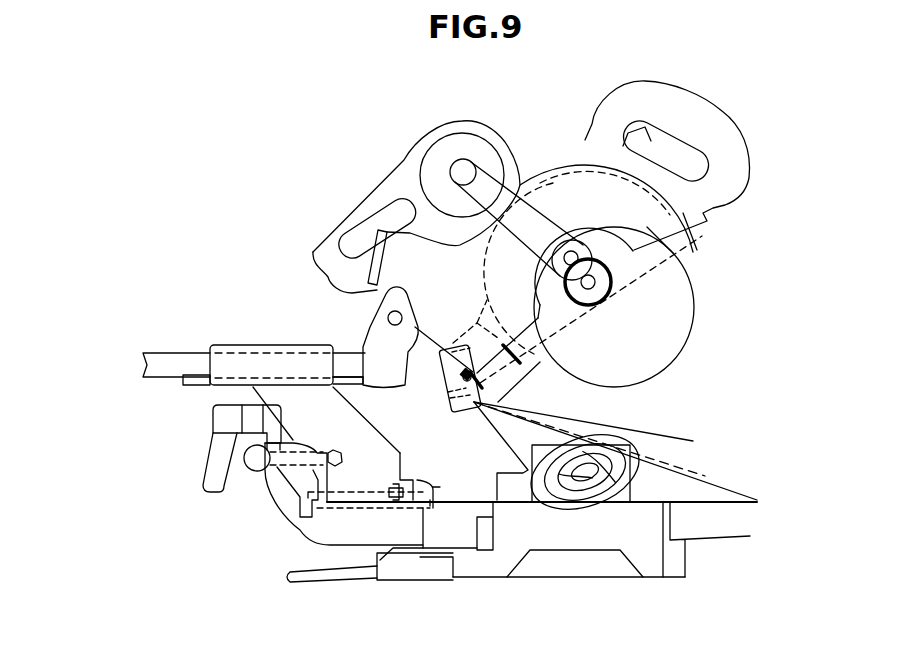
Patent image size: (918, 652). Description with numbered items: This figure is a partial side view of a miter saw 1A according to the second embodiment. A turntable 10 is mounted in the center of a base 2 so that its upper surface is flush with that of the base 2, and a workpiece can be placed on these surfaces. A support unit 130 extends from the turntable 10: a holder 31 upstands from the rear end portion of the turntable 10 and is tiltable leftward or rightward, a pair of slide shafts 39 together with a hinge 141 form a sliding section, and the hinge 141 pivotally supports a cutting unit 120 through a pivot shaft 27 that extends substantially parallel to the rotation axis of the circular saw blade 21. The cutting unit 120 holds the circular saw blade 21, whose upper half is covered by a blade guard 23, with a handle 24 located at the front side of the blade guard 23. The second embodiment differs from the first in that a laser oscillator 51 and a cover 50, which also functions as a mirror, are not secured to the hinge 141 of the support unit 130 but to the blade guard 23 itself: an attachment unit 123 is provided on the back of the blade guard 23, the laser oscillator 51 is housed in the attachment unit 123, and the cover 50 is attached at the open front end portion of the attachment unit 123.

The miter saw 1A is at (797, 168).
The base 2 is at (574, 540).
The turntable 10 is at (717, 528).
The circular saw blade 21 is at (672, 322).
The blade guard 23 is at (672, 250).
The handle 24 is at (705, 118).
The pivot shaft 27 is at (383, 340).
The holder 31 is at (328, 480).
The slide shaft 39 is at (178, 360).
The cover 50 is at (467, 415).
The laser oscillator 51 is at (444, 410).
The cutting unit 120 is at (556, 138).
The attachment unit 123 is at (443, 378).
The support unit 130 is at (192, 450).
The hinge 141 is at (378, 348).